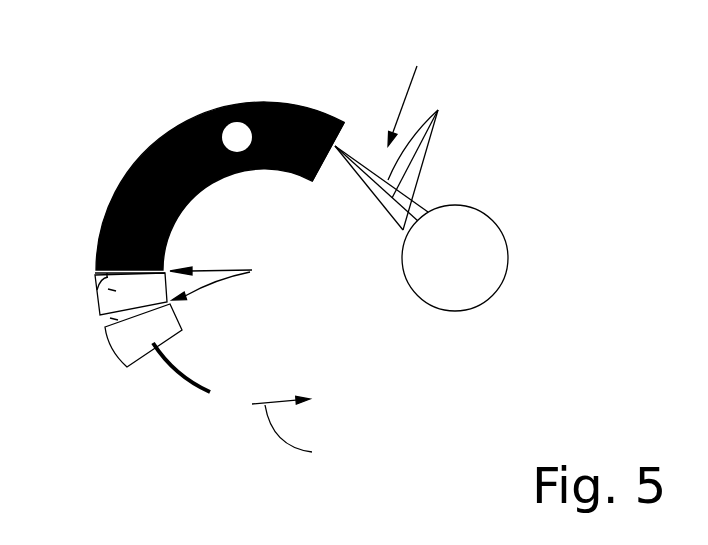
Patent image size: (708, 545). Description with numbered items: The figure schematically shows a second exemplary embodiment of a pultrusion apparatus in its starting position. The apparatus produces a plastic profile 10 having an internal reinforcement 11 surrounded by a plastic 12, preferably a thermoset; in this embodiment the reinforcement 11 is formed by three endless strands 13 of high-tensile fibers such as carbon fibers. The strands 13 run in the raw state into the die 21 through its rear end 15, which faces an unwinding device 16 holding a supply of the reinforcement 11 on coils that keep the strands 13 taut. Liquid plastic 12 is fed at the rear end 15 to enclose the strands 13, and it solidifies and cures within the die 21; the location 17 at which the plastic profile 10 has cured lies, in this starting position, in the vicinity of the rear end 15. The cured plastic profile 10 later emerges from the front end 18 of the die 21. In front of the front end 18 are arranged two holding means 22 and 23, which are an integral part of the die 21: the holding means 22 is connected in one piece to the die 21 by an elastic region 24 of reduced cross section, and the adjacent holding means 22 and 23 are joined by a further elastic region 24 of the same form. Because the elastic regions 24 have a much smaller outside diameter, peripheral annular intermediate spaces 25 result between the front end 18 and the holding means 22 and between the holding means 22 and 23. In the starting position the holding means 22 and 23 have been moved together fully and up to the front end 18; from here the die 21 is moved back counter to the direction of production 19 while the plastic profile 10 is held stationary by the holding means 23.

The plastic profile 10 is at (183, 423).
The internal reinforcement 11 is at (415, 92).
The plastic 12 is at (185, 382).
The endless strands 13 is at (402, 158).
The rear end of the die 15 is at (345, 133).
The unwinding device 16 is at (473, 240).
The location at which the plastic profile has cured 17 is at (235, 138).
The front end of the die 18 is at (95, 272).
The direction of production 19 is at (298, 432).
The die 21 is at (285, 104).
The holding means 22 is at (110, 278).
The holding means 23 is at (143, 348).
The elastic region 24 is at (112, 290).
The intermediate spaces 25 is at (228, 278).